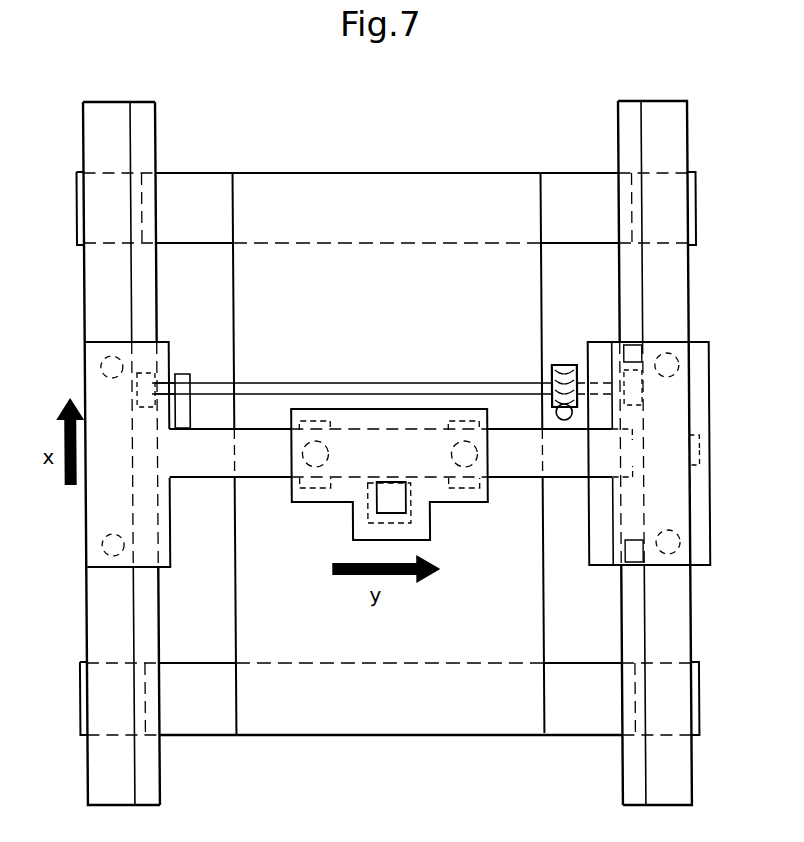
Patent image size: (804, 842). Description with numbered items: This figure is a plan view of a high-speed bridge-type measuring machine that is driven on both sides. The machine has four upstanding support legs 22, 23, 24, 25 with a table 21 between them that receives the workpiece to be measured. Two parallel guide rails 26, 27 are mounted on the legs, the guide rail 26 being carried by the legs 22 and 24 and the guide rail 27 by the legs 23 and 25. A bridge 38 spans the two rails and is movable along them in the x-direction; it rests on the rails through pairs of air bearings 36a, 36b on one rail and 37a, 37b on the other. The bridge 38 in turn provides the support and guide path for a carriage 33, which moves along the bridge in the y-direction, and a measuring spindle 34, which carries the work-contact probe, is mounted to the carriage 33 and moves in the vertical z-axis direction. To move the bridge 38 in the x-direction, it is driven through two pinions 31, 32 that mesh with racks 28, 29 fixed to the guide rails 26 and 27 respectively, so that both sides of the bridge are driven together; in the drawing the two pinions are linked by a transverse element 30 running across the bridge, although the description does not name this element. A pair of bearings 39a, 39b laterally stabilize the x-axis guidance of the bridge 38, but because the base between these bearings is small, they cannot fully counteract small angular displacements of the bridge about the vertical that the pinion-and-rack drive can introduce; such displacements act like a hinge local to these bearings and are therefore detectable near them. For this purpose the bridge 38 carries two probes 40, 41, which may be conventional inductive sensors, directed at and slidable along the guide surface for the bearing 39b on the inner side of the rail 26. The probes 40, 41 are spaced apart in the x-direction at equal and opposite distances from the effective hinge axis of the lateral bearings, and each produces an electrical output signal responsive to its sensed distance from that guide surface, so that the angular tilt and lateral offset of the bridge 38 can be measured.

The table 21 is at (280, 640).
The support leg 22 is at (556, 715).
The support leg 23 is at (217, 715).
The support leg 24 is at (578, 188).
The support leg 25 is at (195, 197).
The guide rail 26 is at (663, 113).
The guide rail 27 is at (95, 112).
The rack 28 is at (627, 113).
The rack 29 is at (140, 113).
The drive rod 30 is at (305, 388).
The pinion 31 is at (655, 392).
The pinion 32 is at (150, 388).
The carriage 33 is at (345, 457).
The measuring spindle 34 is at (398, 497).
The air bearing 36a is at (680, 540).
The air bearing 36b is at (678, 362).
The air bearing 37a is at (105, 545).
The air bearing 37b is at (105, 362).
The bridge 38 is at (512, 455).
The bearing 39a is at (700, 440).
The bearing 39b is at (660, 462).
The probe 40 is at (615, 565).
The probe 41 is at (616, 343).